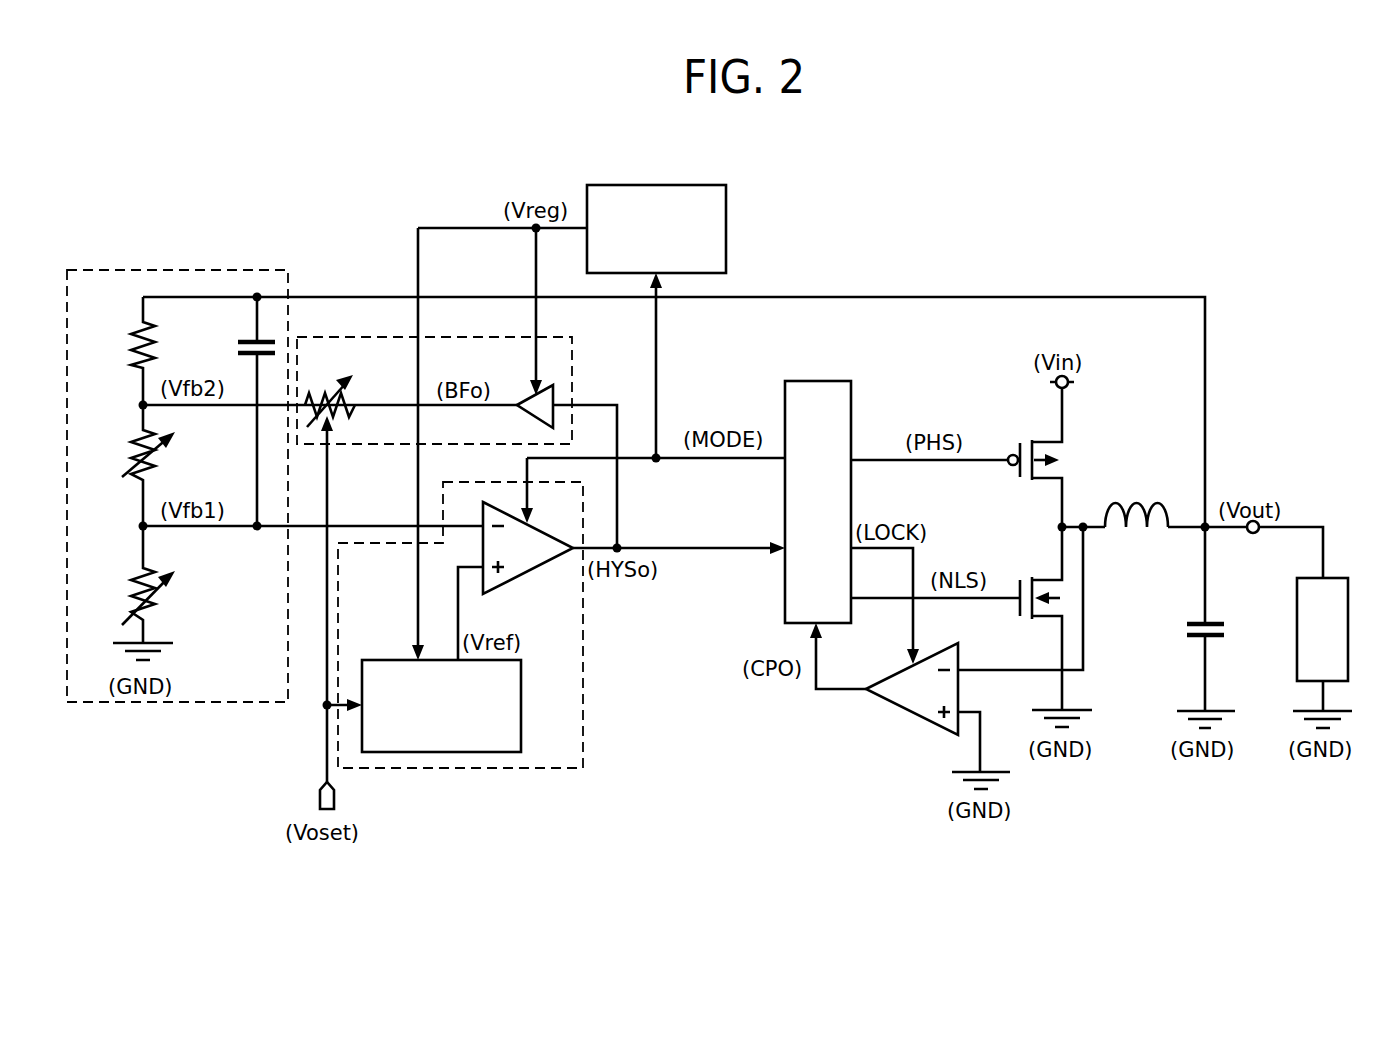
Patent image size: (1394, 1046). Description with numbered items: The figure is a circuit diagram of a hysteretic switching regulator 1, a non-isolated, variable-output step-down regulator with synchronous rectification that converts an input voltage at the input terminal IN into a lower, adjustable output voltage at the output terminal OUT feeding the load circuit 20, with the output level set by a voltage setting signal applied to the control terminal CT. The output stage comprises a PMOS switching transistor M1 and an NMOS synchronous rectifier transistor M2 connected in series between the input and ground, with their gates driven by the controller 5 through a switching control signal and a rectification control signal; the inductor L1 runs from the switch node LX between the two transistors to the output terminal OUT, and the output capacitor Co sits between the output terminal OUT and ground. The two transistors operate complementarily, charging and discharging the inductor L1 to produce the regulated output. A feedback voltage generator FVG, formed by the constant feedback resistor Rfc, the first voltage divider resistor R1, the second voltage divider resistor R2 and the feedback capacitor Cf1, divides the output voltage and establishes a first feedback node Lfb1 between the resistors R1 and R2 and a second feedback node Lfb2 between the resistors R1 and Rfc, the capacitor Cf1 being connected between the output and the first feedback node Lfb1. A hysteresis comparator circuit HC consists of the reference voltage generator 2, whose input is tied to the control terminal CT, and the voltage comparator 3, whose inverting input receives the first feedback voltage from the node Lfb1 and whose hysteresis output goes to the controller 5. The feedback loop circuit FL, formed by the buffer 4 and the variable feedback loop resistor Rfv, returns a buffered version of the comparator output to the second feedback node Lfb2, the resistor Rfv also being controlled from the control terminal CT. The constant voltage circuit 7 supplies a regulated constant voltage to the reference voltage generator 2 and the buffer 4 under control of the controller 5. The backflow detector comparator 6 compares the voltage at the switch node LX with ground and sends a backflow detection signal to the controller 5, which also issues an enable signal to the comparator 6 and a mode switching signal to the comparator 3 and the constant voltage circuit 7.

The hysteretic switching regulator 1 is at (962, 262).
The reference voltage generator 2 is at (385, 660).
The voltage comparator 3 is at (527, 574).
The buffer 4 is at (530, 420).
The controller 5 is at (828, 381).
The backflow detector comparator 6 is at (916, 718).
The constant voltage circuit 7 is at (697, 185).
The load circuit 20 is at (1350, 606).
The feedback voltage generator FVG is at (128, 270).
The feedback loop circuit FL is at (383, 446).
The hysteresis comparator circuit HC is at (521, 768).
The constant feedback resistor Rfc is at (120, 351).
The feedback capacitor Cf1 is at (235, 412).
The first voltage divider resistor R1 is at (135, 465).
The second voltage divider resistor R2 is at (135, 593).
The variable feedback loop resistor Rfv is at (330, 526).
The first feedback node Lfb1 is at (140, 526).
The second feedback node Lfb2 is at (140, 405).
The control terminal CT is at (320, 797).
The switching transistor M1 is at (956, 457).
The synchronous rectifier transistor M2 is at (971, 627).
The inductor L1 is at (1136, 503).
The output capacitor Co is at (1194, 627).
The switch node LX is at (1058, 526).
The input terminal IN is at (1068, 388).
The output terminal OUT is at (1254, 534).